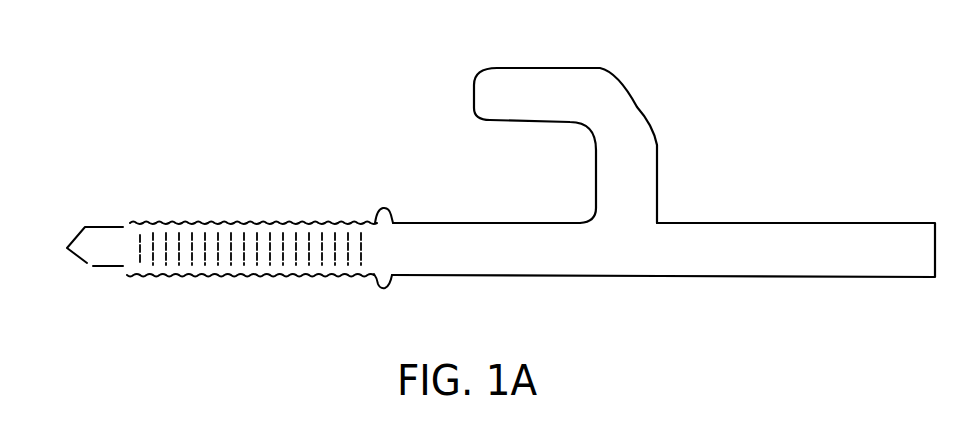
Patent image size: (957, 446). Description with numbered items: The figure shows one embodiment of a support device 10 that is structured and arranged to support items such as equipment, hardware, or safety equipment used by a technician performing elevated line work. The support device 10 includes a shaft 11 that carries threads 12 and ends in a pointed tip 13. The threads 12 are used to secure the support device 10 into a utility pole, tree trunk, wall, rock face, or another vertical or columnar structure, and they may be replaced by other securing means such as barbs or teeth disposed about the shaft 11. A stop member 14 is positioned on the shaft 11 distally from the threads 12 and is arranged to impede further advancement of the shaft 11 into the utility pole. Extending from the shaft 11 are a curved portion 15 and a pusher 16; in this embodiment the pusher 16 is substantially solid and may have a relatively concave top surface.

The support device 10 is at (369, 92).
The shaft 11 is at (453, 223).
The threads 12 is at (235, 222).
The pointed tip 13 is at (67, 248).
The stop member 14 is at (388, 287).
The curved portion 15 is at (607, 77).
The pusher 16 is at (788, 223).